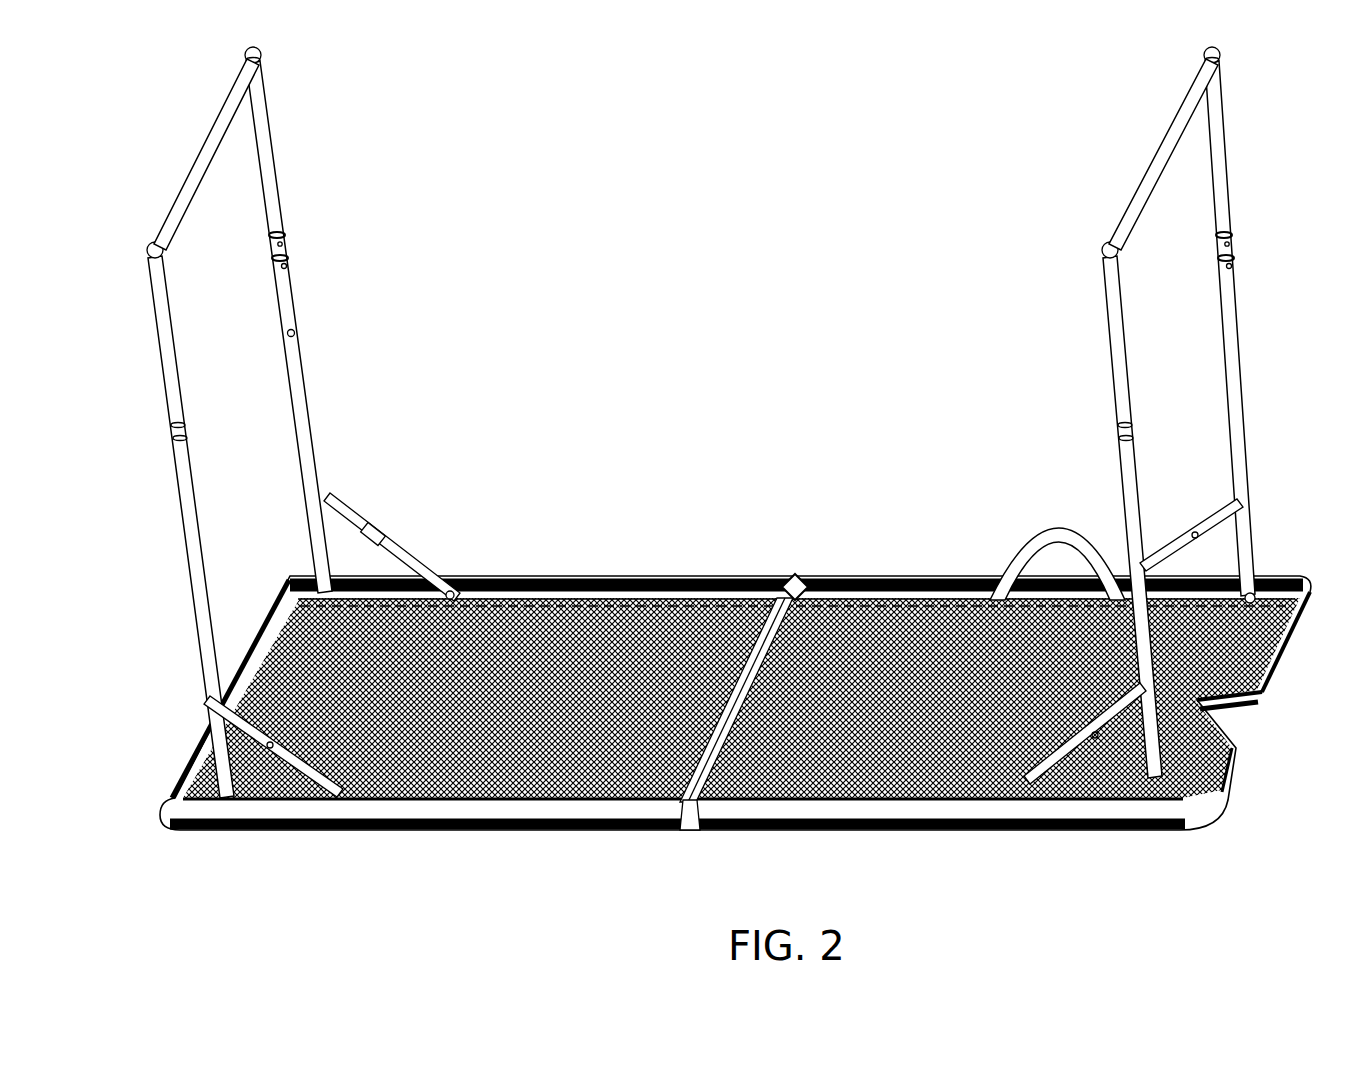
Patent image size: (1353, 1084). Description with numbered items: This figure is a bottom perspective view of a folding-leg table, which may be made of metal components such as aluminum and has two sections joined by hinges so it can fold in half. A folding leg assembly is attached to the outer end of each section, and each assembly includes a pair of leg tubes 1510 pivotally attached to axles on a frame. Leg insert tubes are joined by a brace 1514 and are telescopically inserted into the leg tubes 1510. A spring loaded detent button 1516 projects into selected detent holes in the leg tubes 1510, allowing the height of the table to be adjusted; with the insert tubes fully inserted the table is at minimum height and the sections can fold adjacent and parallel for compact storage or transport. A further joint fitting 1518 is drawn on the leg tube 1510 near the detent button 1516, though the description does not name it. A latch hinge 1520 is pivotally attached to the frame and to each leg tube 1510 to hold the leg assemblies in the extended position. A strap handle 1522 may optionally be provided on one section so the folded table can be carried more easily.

The leg tube 1510 is at (302, 422).
The brace 1514 is at (205, 165).
The spring loaded detent button 1516 is at (301, 333).
The joint 1518 is at (290, 237).
The latch hinge 1520 is at (405, 558).
The strap handle 1522 is at (1055, 535).